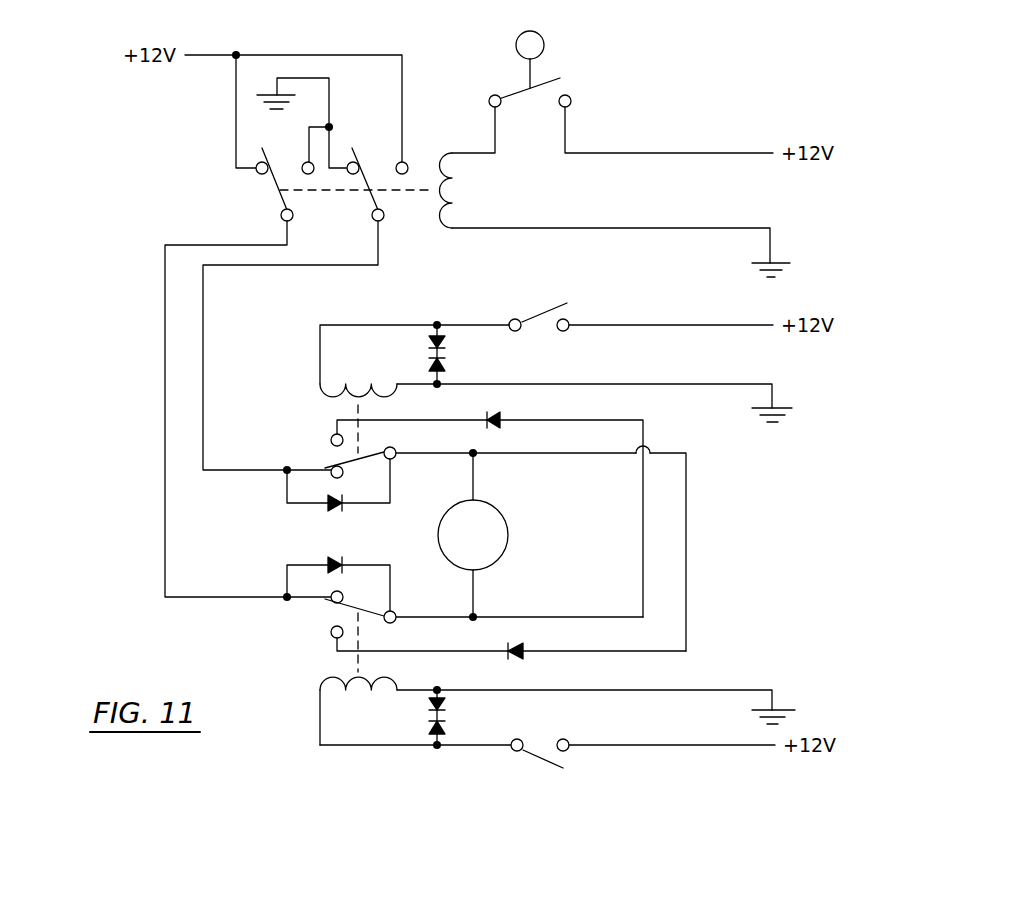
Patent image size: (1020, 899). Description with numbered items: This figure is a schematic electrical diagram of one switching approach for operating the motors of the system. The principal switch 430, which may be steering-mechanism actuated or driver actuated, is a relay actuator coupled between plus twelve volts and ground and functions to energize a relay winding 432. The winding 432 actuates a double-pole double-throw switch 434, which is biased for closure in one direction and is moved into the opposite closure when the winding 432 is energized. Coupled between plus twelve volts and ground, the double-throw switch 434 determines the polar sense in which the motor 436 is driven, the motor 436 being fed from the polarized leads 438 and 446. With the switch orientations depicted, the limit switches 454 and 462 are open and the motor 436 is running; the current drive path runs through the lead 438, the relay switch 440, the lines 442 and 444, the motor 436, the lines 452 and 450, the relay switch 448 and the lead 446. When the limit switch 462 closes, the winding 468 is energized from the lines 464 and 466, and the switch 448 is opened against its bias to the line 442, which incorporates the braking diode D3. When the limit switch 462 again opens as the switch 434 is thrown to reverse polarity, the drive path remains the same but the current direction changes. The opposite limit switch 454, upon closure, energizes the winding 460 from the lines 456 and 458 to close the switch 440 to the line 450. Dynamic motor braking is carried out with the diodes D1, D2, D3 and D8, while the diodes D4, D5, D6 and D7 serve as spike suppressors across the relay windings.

The principal switch 430 is at (551, 80).
The relay winding 432 is at (442, 150).
The double-pole double-throw switch 434 is at (339, 44).
The motor 436 is at (511, 532).
The lead 438 is at (206, 308).
The relay switch 440 is at (313, 455).
The line 442 is at (536, 453).
The line 444 is at (478, 480).
The lead 446 is at (165, 428).
The relay switch 448 is at (314, 621).
The line 450 is at (560, 617).
The line 452 is at (478, 594).
The limit switch 454 is at (542, 316).
The line 456 is at (372, 325).
The line 458 is at (590, 384).
The winding 460 is at (343, 384).
The limit switch 462 is at (542, 762).
The line 464 is at (658, 747).
The line 466 is at (712, 688).
The winding 468 is at (343, 691).
The diode D1 is at (331, 511).
The diode D2 is at (341, 558).
The braking diode D3 is at (520, 660).
The diode D4 is at (447, 340).
The diode D5 is at (447, 368).
The diode D6 is at (448, 733).
The diode D7 is at (448, 702).
The diode D8 is at (497, 412).